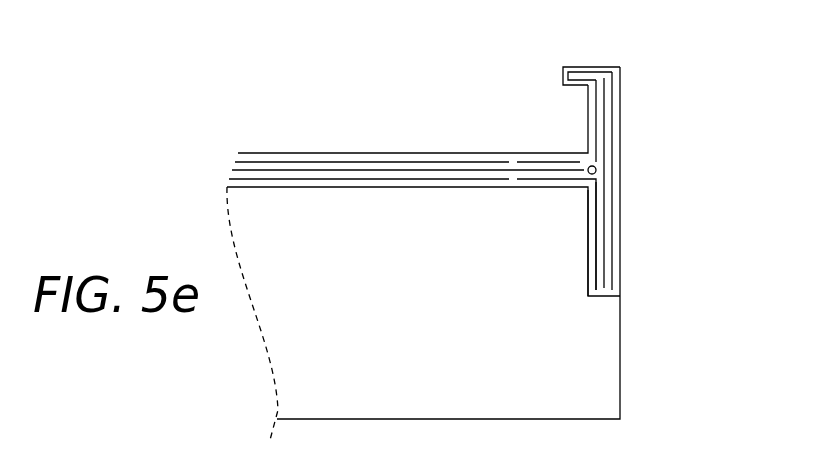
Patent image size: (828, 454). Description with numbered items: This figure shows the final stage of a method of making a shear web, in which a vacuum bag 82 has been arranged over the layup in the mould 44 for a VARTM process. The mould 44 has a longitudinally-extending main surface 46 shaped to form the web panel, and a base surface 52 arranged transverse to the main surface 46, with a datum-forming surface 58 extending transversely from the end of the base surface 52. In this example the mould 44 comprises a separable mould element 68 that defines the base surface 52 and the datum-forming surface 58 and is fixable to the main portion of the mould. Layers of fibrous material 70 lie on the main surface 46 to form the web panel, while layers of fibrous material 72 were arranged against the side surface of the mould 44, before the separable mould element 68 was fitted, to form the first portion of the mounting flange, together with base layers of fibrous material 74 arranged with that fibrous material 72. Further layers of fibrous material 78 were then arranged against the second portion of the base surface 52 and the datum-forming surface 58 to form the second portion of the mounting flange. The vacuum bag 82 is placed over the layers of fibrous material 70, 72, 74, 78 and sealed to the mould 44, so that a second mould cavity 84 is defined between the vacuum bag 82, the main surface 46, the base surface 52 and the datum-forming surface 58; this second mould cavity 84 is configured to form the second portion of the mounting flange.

The mould 44 is at (300, 110).
The main surface 46 is at (332, 188).
The base surface 52 is at (618, 137).
The datum-forming surface 58 is at (591, 68).
The separable mould element 68 is at (614, 172).
The layers of fibrous material 70 is at (390, 178).
The layers of fibrous material 72 is at (594, 215).
The base layers of fibrous material 74 is at (605, 228).
The layers of fibrous material 78 is at (594, 117).
The vacuum bag 82 is at (353, 153).
The second mould cavity 84 is at (448, 153).